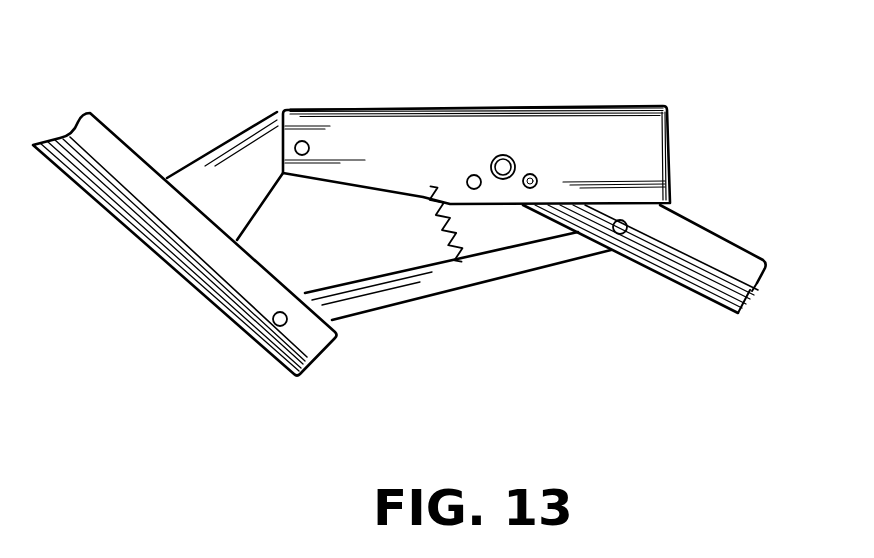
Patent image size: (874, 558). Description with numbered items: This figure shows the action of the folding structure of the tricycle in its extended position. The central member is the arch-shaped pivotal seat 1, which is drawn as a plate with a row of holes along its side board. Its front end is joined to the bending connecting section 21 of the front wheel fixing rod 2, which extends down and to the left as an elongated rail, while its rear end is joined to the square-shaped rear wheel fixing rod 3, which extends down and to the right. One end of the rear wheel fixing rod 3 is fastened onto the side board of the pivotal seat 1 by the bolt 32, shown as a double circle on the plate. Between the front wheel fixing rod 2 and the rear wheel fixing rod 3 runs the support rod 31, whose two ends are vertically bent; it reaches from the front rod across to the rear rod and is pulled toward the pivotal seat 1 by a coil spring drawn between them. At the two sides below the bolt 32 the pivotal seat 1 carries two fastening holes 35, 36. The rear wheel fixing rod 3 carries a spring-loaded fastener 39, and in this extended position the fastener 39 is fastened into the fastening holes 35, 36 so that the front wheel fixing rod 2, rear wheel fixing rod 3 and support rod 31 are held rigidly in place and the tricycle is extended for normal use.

The pivotal seat 1 is at (543, 108).
The front wheel fixing rod 2 is at (197, 292).
The rear wheel fixing rod 3 is at (713, 227).
The bending connecting section 21 is at (238, 130).
The support rod 31 is at (440, 294).
The bolt 32 is at (497, 158).
The fastening hole 35 is at (470, 177).
The fastening hole 36 is at (533, 175).
The fastener 39 is at (528, 188).